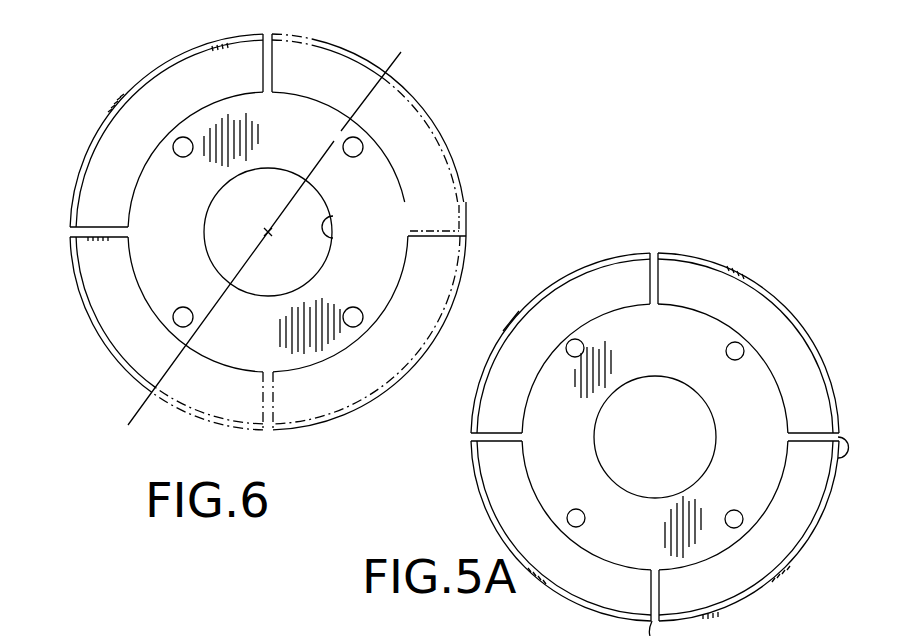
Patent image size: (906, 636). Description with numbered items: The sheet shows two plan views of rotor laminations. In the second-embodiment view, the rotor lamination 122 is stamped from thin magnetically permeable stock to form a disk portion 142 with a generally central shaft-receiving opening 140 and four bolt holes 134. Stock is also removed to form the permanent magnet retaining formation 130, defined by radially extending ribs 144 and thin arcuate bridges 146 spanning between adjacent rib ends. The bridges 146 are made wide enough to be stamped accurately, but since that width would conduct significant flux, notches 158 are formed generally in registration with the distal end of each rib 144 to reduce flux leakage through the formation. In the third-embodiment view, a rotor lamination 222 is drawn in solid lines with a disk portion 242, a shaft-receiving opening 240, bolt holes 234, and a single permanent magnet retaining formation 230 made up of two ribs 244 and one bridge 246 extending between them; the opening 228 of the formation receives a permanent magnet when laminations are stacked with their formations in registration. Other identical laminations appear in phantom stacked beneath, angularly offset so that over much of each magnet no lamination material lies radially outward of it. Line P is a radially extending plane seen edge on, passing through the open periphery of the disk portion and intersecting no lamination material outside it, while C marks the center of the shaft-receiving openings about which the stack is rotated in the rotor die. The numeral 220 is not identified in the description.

In FIG. 6, the insert plate 220 is at (306, 408).
In FIG. 6, the rotor lamination 222 is at (146, 40).
In FIG. 6, the openings 228 is at (212, 70).
In FIG. 6, the permanent magnet retaining formation 230 is at (114, 78).
In FIG. 6, the mounting holes 234 is at (176, 146).
In FIG. 6, the shaft-receiving openings 240 is at (333, 211).
In FIG. 6, the disk portion 242 is at (290, 107).
In FIG. 6, the ribs 244 is at (275, 60).
In FIG. 6, the bridge 246 is at (112, 118).
In FIG. 6, the center C is at (270, 228).
In FIG. 6, the line P is at (401, 52).
In FIG. 5A, the rotor laminations 122 is at (750, 240).
In FIG. 5A, the permanent magnet retaining formations 130 is at (618, 250).
In FIG. 5A, the holes 134 is at (571, 343).
In FIG. 5A, the shaft-receiving opening 140 is at (704, 471).
In FIG. 5A, the disk portion 142 is at (759, 362).
In FIG. 5A, the ribs 144 is at (659, 279).
In FIG. 5A, the bridges 146 is at (591, 261).
In FIG. 5A, the notches 158 is at (655, 250).